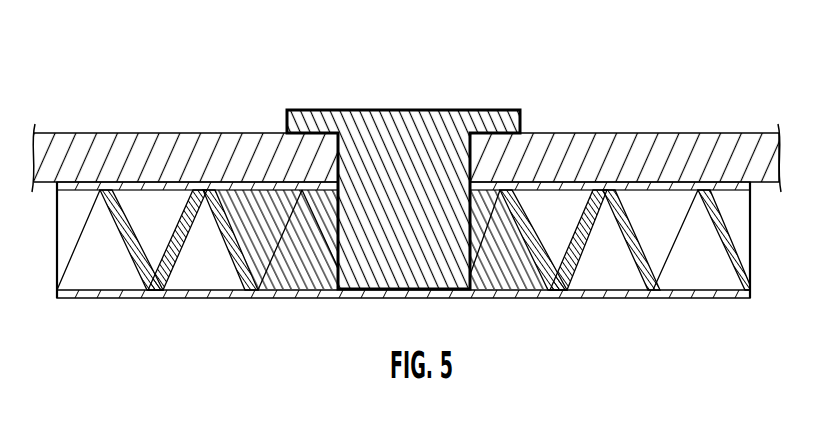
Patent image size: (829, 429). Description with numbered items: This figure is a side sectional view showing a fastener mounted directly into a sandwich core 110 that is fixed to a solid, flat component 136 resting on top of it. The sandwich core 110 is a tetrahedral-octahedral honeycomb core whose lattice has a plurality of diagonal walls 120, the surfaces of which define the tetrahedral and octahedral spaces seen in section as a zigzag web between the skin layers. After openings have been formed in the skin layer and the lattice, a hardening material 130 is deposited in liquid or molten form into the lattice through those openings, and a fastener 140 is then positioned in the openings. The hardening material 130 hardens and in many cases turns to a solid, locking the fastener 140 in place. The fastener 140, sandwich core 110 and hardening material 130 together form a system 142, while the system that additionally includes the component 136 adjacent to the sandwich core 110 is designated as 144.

The sandwich core 110 is at (394, 300).
The diagonal walls 120 is at (227, 253).
The hardening material 130 is at (297, 275).
The component 136 is at (90, 133).
The fastener 140 is at (425, 109).
The system 142 is at (100, 301).
The system 144 is at (406, 217).